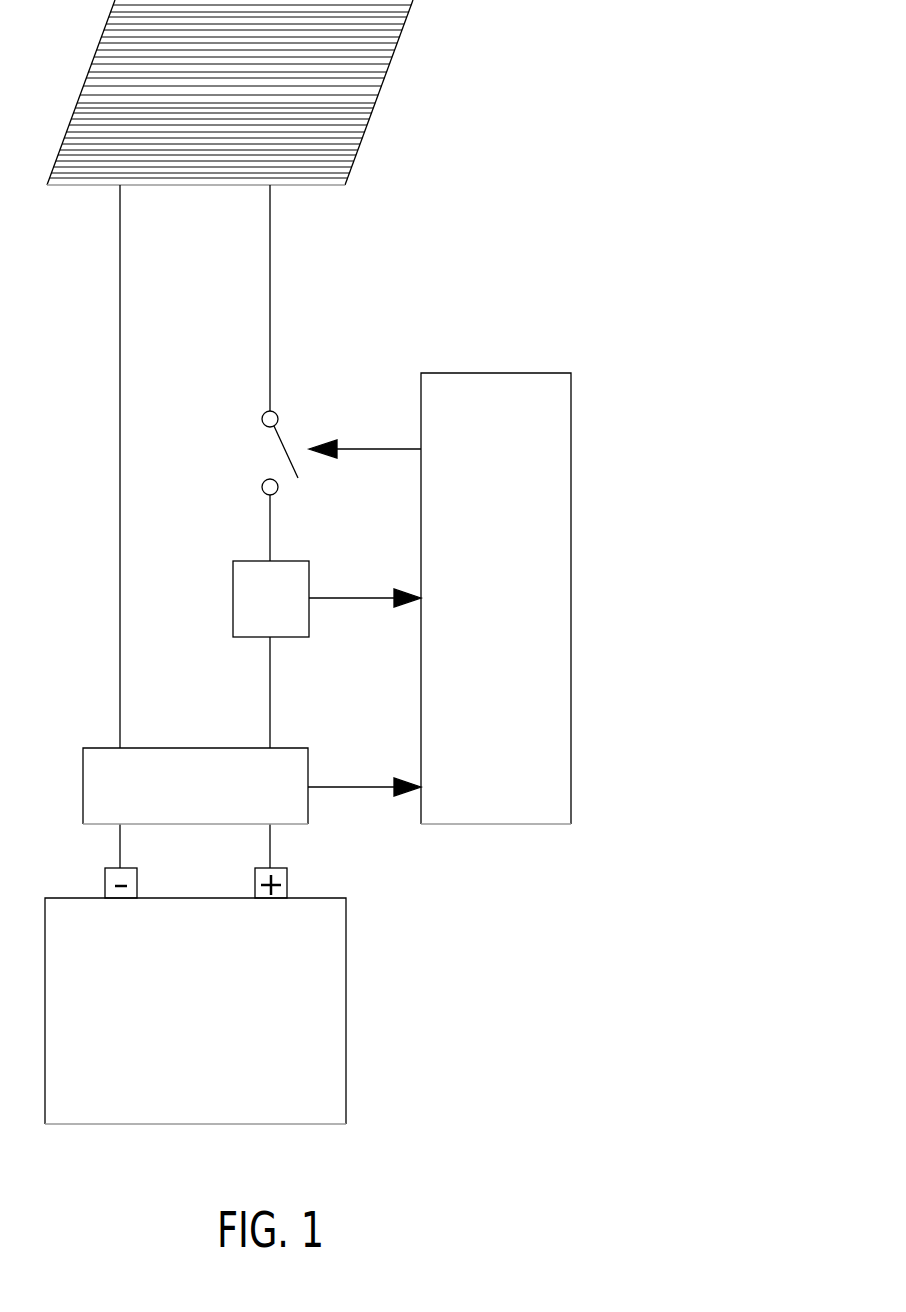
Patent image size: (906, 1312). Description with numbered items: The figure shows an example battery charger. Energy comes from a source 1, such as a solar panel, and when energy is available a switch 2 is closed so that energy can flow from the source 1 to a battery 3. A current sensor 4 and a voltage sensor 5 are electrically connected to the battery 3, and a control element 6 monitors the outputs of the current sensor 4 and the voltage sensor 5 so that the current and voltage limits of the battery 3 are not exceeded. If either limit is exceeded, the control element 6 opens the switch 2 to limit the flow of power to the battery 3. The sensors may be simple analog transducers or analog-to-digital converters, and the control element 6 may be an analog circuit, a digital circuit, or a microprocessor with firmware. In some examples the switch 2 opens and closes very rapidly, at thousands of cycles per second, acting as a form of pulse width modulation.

The source 1 is at (406, 80).
The switch 2 is at (250, 458).
The battery 3 is at (190, 1028).
The current sensor 4 is at (265, 614).
The voltage sensor 5 is at (189, 801).
The control element 6 is at (490, 614).